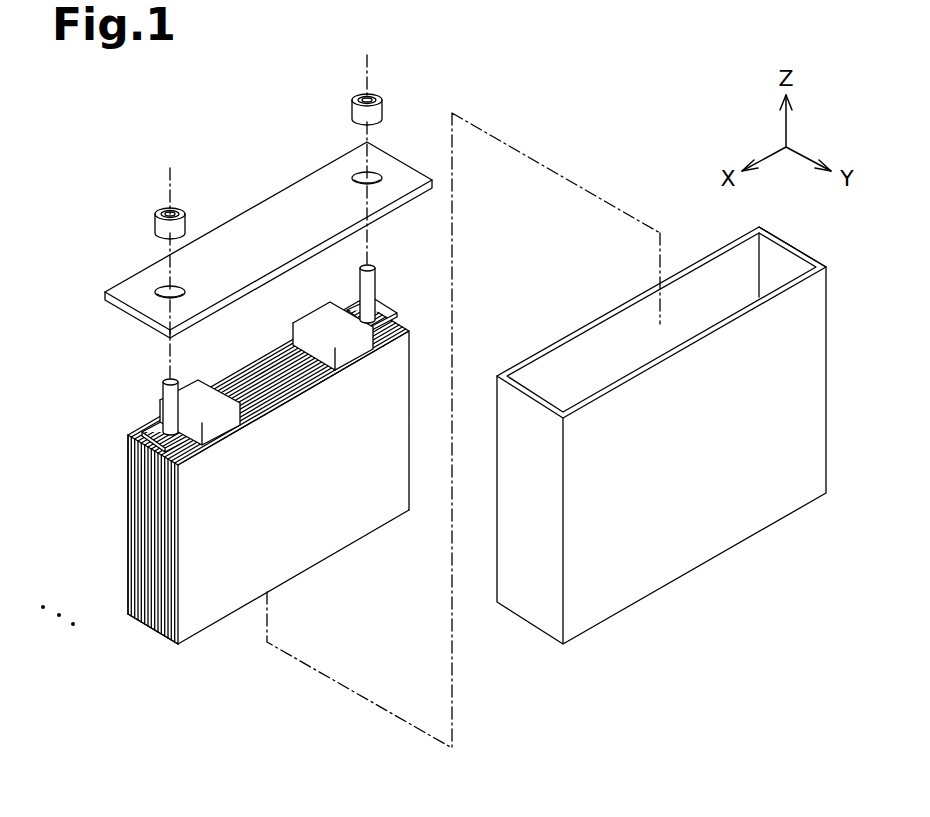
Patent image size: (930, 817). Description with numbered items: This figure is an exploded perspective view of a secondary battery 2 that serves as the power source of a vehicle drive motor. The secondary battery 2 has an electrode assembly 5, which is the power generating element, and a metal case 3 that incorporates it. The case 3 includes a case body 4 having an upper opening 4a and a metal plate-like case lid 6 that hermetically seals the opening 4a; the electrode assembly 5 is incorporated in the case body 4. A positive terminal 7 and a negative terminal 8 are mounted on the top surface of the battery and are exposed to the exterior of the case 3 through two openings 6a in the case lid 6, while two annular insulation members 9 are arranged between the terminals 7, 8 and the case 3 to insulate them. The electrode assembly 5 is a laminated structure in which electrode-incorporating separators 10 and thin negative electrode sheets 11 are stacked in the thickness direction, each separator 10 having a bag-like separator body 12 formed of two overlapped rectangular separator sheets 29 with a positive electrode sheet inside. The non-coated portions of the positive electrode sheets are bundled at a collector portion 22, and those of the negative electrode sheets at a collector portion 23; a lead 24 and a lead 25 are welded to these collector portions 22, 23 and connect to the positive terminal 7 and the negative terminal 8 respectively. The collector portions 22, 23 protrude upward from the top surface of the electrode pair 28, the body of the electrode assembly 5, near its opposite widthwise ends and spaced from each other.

The secondary battery 2 is at (114, 121).
The case 3 is at (447, 71).
The case body 4 is at (696, 262).
The upper opening 4a is at (783, 254).
The electrode assembly 5 is at (244, 516).
The case lid 6 is at (400, 156).
The openings 6a is at (353, 177).
The positive terminal 7 is at (162, 392).
The negative terminal 8 is at (378, 280).
The annular insulation members 9 is at (352, 103).
The electrode-incorporating separator 10 is at (194, 706).
The negative electrode sheet 11 is at (172, 646).
The separator body 12 is at (388, 384).
The collector portion 22 is at (199, 380).
The collector portion 23 is at (333, 302).
The lead 24 is at (153, 427).
The lead 25 is at (390, 307).
The electrode pair 28 is at (372, 527).
The separator sheets 29 is at (180, 648).